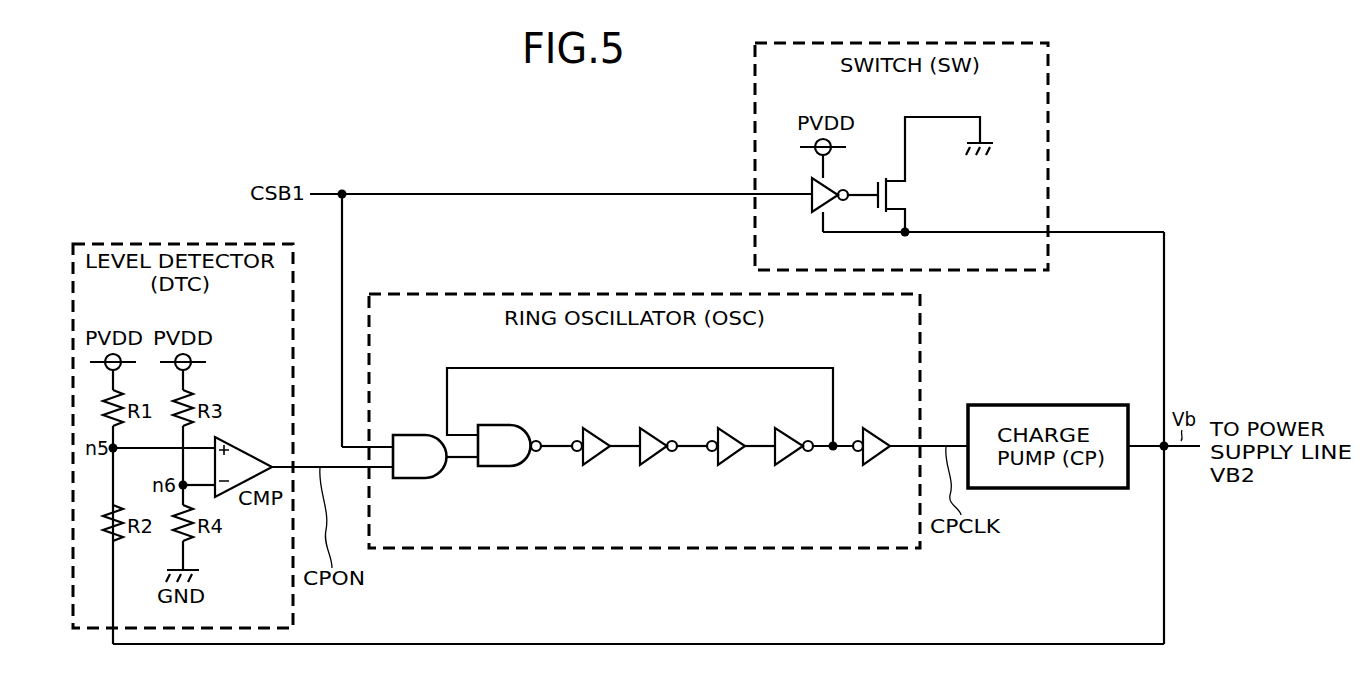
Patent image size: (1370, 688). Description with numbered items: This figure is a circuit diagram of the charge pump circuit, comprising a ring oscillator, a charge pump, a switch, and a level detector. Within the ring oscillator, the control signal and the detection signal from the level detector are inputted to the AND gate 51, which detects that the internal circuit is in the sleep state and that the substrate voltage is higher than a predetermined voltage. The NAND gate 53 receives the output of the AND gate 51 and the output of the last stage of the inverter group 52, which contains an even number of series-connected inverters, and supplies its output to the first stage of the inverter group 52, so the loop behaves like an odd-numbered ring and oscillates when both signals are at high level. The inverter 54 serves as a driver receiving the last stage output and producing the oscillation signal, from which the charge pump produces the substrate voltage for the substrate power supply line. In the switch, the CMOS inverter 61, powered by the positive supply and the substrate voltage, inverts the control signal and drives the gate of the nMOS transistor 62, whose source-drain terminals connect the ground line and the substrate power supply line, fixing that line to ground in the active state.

The AND gate 51 is at (417, 479).
The inverter group 52 is at (811, 474).
The NAND gate 53 is at (500, 467).
The inverter 54 is at (879, 466).
The CMOS inverter 61 is at (806, 210).
The nMOS transistor 62 is at (908, 200).